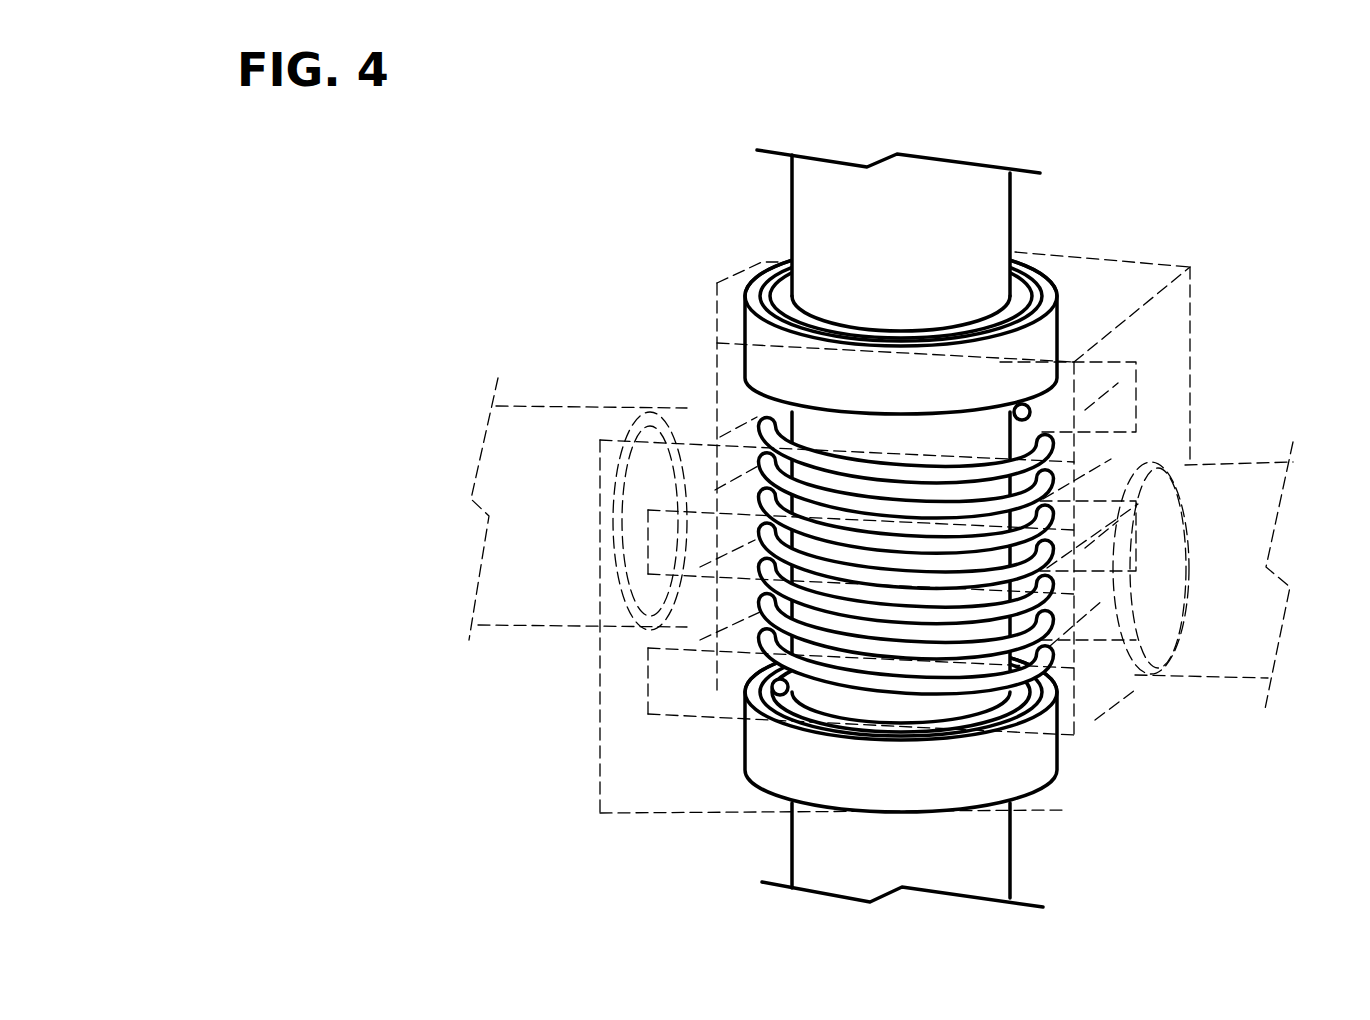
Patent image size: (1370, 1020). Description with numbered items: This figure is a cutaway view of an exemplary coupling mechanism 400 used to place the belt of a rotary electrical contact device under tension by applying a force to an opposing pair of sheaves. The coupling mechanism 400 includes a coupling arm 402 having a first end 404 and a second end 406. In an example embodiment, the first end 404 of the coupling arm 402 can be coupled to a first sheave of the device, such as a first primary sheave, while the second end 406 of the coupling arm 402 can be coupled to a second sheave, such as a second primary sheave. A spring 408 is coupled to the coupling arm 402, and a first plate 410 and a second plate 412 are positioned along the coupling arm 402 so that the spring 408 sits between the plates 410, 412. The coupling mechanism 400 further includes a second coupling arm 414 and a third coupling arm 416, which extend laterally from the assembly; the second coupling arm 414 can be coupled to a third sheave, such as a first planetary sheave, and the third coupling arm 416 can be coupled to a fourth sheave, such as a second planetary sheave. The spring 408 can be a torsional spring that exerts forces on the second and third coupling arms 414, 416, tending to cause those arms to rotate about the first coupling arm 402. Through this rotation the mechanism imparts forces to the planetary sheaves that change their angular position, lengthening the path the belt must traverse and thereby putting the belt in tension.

The coupling mechanism 400 is at (1245, 92).
The coupling arm 402 is at (790, 247).
The first end 404 is at (1075, 150).
The second end 406 is at (1075, 928).
The spring 408 is at (780, 470).
The first plate 410 is at (1046, 280).
The second plate 412 is at (1048, 760).
The second coupling arm 414 is at (563, 413).
The third coupling arm 416 is at (1221, 474).